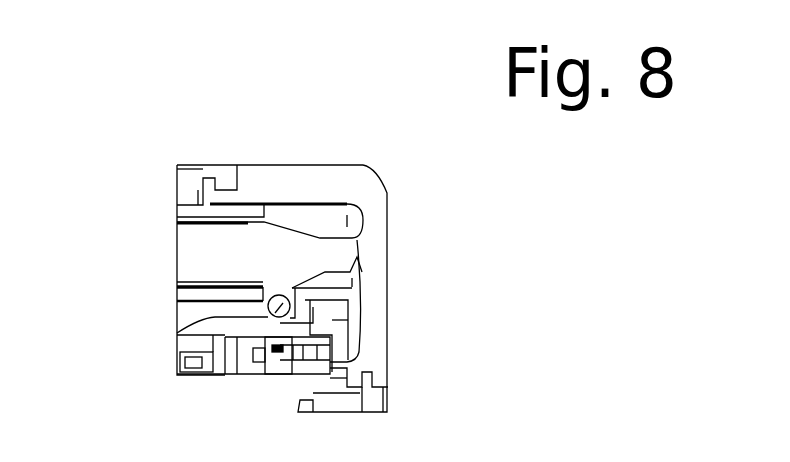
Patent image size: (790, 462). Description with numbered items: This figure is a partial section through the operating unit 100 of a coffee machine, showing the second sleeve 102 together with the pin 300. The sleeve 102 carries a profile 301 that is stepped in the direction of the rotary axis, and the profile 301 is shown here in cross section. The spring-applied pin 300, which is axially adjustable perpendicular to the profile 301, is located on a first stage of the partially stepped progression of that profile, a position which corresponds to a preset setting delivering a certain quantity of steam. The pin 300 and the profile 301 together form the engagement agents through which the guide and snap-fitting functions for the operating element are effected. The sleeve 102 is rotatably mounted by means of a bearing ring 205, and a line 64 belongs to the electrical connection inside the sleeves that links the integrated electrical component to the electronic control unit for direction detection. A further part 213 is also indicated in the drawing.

The operating unit 100 is at (333, 148).
The second sleeve 102 is at (327, 187).
The bearing ring 205 is at (223, 183).
The pin 300 is at (237, 247).
The profile 301 is at (360, 243).
The line 64 is at (272, 312).
The mounting bracket 213 is at (353, 405).